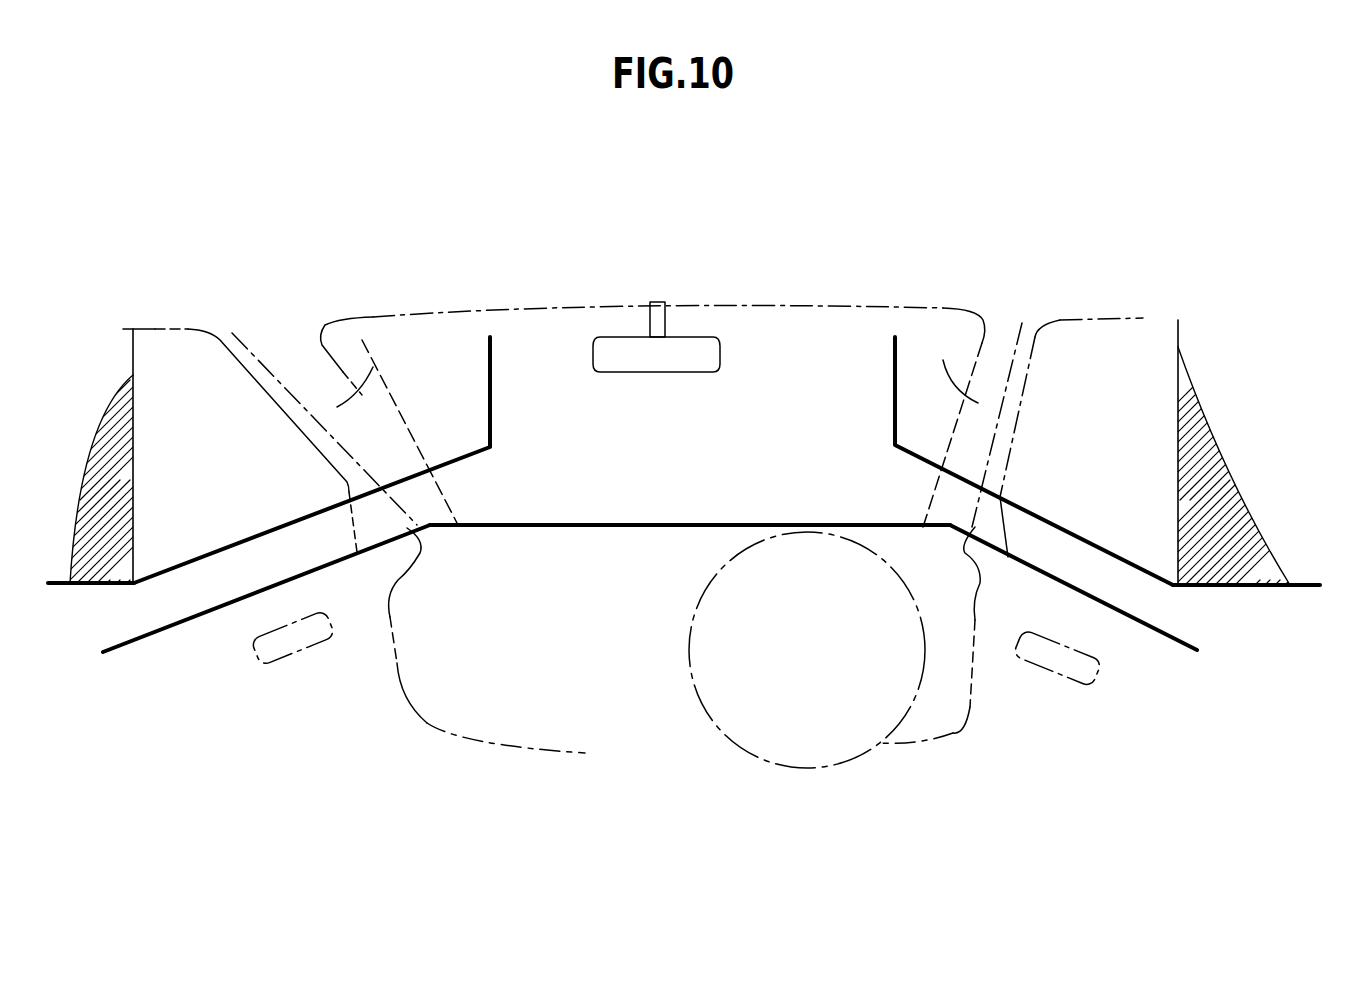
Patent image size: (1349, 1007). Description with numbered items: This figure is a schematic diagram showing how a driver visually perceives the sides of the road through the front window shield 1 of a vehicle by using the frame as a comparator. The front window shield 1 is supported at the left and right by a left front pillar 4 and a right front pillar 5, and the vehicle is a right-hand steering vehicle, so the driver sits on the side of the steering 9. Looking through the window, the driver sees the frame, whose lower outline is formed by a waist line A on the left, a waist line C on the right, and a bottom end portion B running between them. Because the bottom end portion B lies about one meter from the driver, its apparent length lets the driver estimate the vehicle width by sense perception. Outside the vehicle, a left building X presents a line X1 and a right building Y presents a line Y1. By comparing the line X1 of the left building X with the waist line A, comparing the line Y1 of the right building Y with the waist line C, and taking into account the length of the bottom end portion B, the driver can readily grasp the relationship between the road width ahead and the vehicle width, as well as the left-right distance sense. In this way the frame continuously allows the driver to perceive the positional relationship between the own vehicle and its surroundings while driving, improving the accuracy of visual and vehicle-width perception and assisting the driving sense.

The front window shield 1 is at (547, 377).
The left front pillar 4 is at (362, 340).
The right front pillar 5 is at (943, 360).
The steering 9 is at (862, 755).
The waist line A is at (203, 610).
The bottom end portion B is at (620, 525).
The waist line C is at (1127, 613).
The left building X is at (163, 377).
The line of the left building X1 is at (190, 563).
The right building Y is at (1128, 367).
The line of the right building Y1 is at (1130, 566).